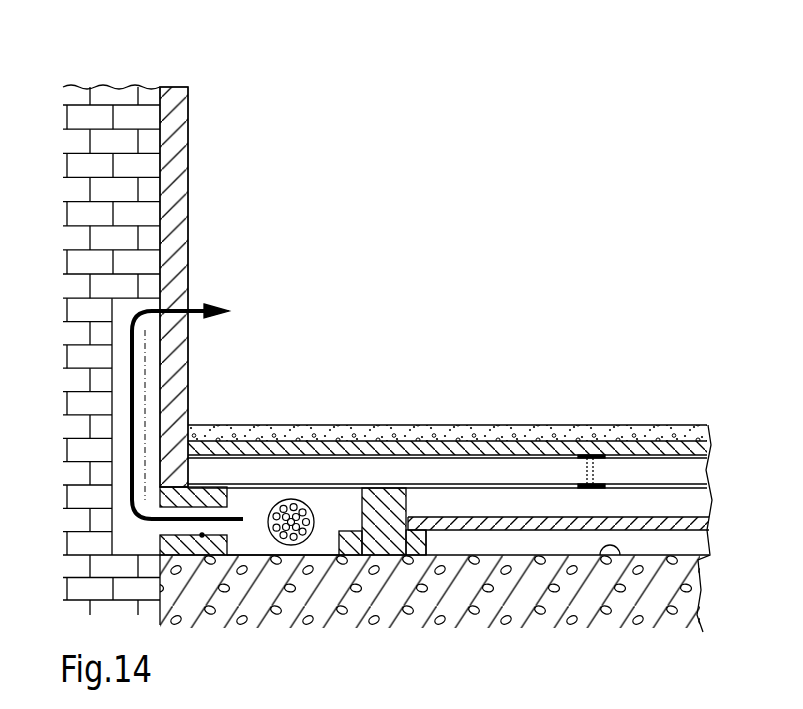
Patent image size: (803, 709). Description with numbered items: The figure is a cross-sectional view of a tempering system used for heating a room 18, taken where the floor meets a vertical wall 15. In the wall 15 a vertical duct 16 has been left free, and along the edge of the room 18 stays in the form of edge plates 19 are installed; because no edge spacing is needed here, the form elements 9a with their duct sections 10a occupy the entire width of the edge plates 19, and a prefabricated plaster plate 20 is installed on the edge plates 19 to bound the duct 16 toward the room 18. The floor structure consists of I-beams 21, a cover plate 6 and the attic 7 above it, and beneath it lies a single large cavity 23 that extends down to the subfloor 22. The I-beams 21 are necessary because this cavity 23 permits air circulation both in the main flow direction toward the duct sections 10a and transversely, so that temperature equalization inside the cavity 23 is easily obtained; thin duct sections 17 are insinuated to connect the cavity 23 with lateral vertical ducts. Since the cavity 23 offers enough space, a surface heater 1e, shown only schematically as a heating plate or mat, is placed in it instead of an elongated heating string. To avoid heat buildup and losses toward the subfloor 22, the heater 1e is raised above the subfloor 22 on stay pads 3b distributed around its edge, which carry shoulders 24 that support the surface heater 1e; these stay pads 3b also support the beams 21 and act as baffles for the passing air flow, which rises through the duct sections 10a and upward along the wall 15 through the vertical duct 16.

The vertical wall 15 is at (110, 87).
The plaster plate 20 is at (188, 137).
The room 18 is at (426, 184).
The vertical duct 16 is at (153, 354).
The thin duct sections 17 is at (294, 499).
The attic 7 is at (405, 432).
The cover plate 6 is at (458, 447).
The I-beams 21 is at (500, 467).
The surface heater 1e is at (709, 536).
The edge plates 19 is at (202, 537).
The form elements 9a is at (227, 541).
The duct sections 10a is at (258, 556).
The shoulders 24 is at (345, 522).
The stay pads 3b is at (395, 556).
The cavity 23 is at (493, 548).
The subfloor 22 is at (615, 548).